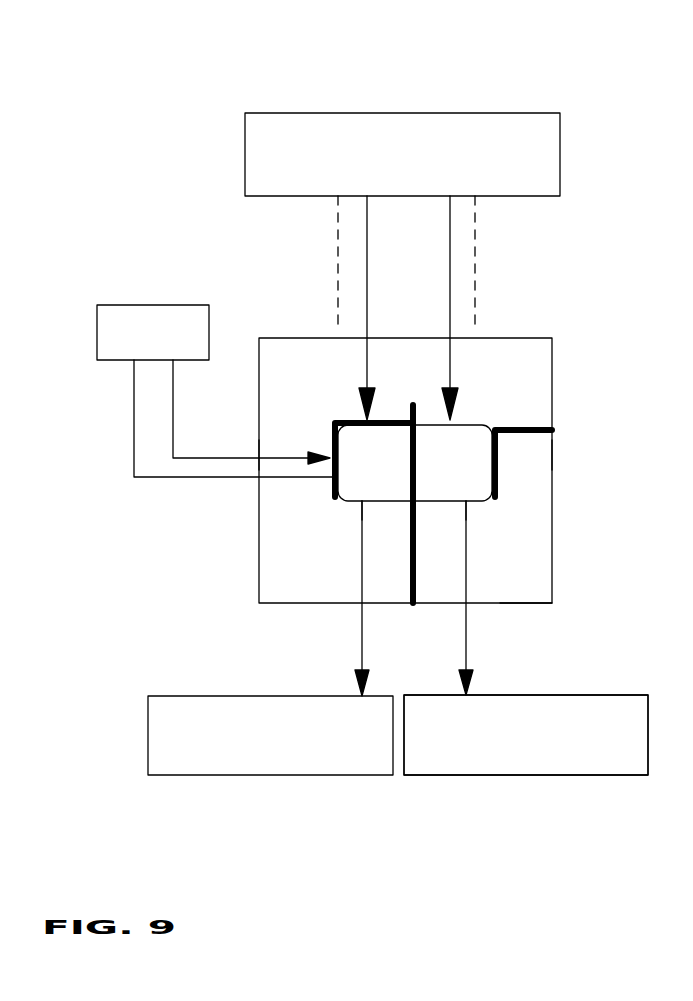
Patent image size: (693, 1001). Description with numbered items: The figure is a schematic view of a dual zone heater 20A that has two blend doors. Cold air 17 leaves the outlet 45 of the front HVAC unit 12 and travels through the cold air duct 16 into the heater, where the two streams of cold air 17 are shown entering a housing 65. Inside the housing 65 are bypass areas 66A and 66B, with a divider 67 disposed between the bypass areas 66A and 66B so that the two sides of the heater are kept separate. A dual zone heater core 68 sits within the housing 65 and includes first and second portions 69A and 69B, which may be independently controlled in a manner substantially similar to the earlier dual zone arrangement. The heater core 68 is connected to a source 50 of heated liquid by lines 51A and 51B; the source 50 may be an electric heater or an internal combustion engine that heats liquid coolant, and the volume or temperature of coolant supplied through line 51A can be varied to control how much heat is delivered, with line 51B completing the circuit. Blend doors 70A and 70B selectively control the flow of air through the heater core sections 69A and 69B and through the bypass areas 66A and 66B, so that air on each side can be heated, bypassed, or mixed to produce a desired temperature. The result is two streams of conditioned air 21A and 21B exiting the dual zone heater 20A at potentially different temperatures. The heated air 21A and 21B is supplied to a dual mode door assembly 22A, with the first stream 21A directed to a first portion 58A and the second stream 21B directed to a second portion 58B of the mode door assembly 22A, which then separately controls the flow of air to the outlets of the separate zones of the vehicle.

The front HVAC unit 12 is at (457, 113).
The outlet 45 is at (355, 196).
The cold air 17 is at (367, 275).
The cold air duct 16 is at (478, 312).
The dual zone heater 20A is at (535, 330).
The source of heated liquid 50 is at (170, 305).
The line 51A is at (208, 453).
The line 51B is at (177, 482).
The blend door 70A is at (342, 420).
The blend door 70B is at (538, 427).
The bypass area 66A is at (283, 503).
The bypass area 66B is at (527, 498).
The first portion of heater core 69A is at (355, 502).
The second portion of heater core 69B is at (473, 502).
The dual zone heater core 68 is at (358, 502).
The divider 67 is at (416, 585).
The housing 65 is at (528, 603).
The conditioned air 21A is at (358, 632).
The conditioned air 21B is at (466, 630).
The dual mode door assembly 22A is at (608, 685).
The first portion of mode door assembly 58A is at (285, 775).
The second portion of mode door assembly 58B is at (498, 775).